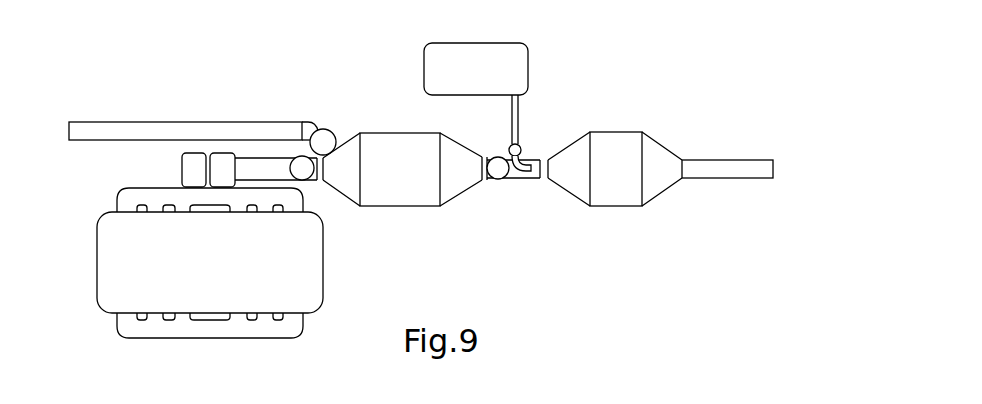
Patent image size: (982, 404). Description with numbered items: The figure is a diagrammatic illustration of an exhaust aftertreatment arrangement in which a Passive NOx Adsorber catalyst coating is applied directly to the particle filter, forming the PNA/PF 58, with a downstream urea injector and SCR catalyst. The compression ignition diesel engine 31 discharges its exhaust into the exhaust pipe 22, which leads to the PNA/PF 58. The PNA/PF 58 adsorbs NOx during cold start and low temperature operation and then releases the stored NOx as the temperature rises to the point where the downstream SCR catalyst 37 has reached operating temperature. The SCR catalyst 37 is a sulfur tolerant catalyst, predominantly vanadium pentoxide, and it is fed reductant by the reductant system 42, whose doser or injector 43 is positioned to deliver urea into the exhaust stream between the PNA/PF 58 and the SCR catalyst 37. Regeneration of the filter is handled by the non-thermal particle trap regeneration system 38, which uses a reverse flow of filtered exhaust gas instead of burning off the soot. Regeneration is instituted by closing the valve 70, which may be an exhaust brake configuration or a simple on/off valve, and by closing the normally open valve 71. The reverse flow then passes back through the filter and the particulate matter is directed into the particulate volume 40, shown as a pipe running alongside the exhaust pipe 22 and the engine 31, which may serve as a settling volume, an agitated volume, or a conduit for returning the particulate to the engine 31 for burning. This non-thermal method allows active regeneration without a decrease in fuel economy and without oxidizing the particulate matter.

The exhaust pipe 22 is at (255, 156).
The compression ignition diesel engine 31 is at (319, 321).
The SCR catalyst 37 is at (628, 124).
The non-thermal particle trap regeneration system 38 is at (339, 129).
The particulate volume 40 is at (197, 117).
The reductant system 42 is at (470, 36).
The doser or injector 43 is at (522, 157).
The PNA/PF 58 is at (424, 128).
The valve 70 is at (494, 181).
The normally open valve 71 is at (311, 181).